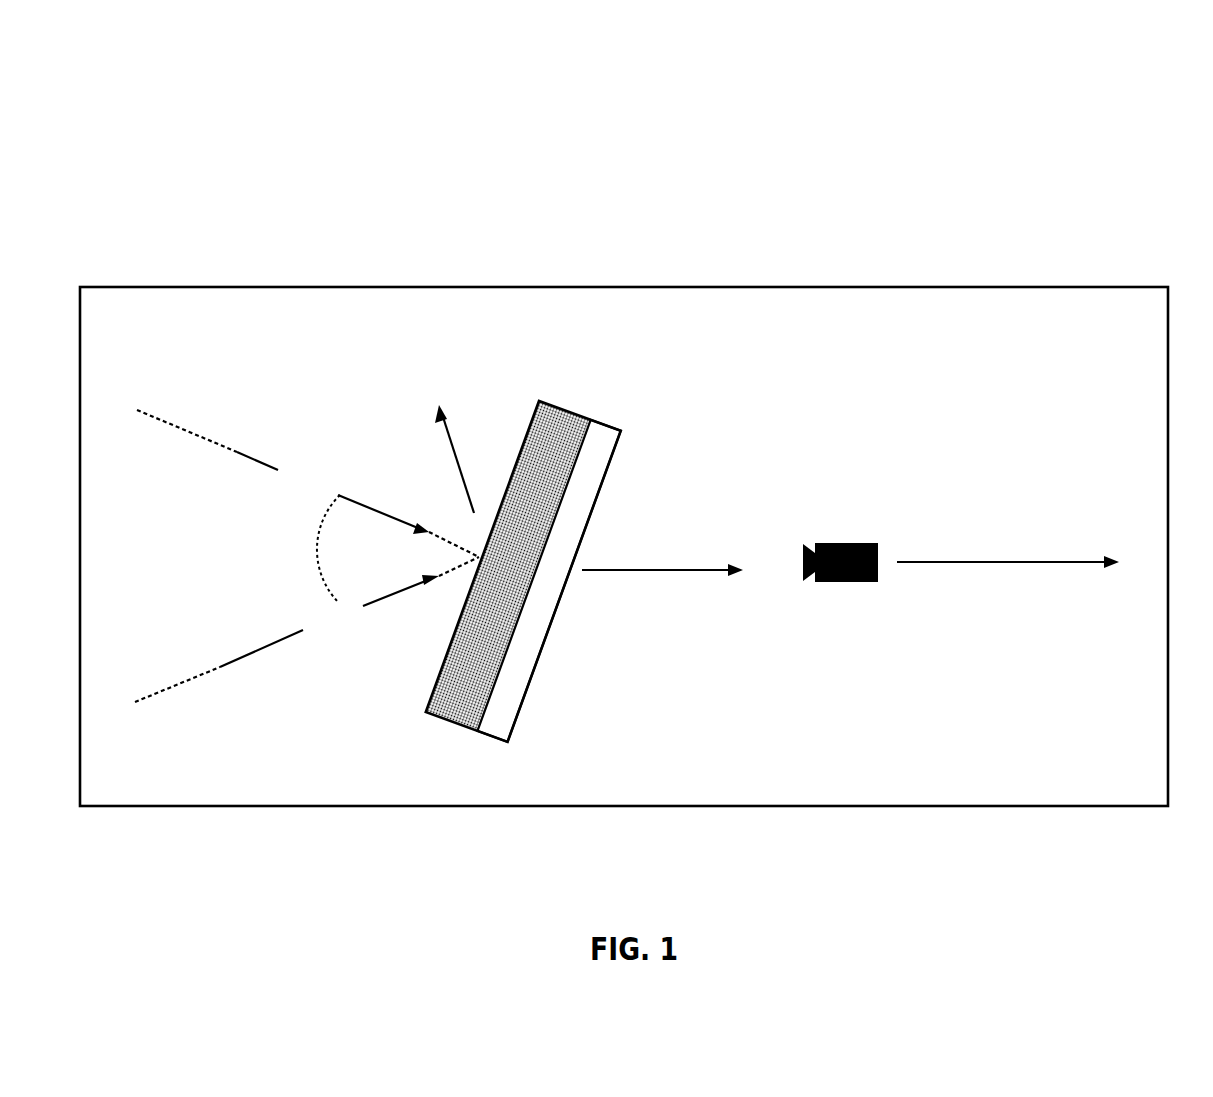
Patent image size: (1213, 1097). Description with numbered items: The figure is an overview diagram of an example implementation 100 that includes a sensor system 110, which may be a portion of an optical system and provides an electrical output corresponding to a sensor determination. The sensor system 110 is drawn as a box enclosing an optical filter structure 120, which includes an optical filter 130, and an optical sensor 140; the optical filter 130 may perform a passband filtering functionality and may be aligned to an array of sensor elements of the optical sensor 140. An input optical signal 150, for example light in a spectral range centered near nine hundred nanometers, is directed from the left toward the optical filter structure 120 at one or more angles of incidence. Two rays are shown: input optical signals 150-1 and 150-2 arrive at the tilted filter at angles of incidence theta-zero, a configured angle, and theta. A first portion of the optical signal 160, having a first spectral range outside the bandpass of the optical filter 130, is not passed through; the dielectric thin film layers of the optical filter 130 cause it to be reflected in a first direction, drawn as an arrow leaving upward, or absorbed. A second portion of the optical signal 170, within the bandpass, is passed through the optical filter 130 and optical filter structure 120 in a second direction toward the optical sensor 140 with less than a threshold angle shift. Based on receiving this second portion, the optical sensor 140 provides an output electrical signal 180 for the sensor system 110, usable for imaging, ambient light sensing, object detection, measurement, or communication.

The example implementation 100 is at (146, 65).
The sensor system 110 is at (722, 286).
The optical filter structure 120 is at (616, 431).
The optical filter 130 is at (432, 713).
The optical sensor 140 is at (847, 542).
The input optical signal 150 is at (250, 555).
The input optical signal 150-1 is at (308, 483).
The input optical signal 150-2 is at (307, 629).
The first portion of the optical signal 160 is at (413, 406).
The second portion of the optical signal 170 is at (672, 609).
The output electrical signal 180 is at (1008, 521).